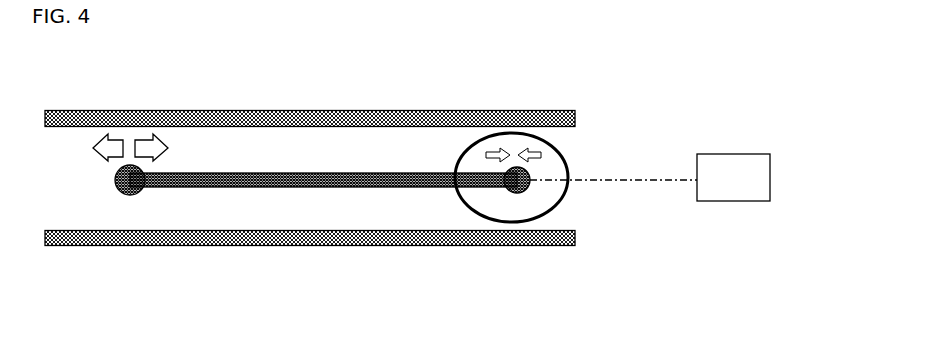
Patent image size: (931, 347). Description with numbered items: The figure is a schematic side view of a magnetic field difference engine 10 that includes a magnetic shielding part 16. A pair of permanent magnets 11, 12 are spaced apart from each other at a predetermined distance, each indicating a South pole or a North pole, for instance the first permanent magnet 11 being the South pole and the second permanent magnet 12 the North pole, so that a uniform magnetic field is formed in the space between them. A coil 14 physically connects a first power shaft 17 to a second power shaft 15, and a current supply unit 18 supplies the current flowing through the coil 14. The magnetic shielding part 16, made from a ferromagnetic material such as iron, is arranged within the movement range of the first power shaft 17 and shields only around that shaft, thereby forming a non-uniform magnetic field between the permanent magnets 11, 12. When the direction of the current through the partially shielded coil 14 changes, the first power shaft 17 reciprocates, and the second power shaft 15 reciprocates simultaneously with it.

The magnetic field difference engine 10 is at (71, 48).
The first permanent magnet 11 is at (222, 111).
The second permanent magnet 12 is at (137, 247).
The coil 14 is at (373, 172).
The second power shaft 15 is at (118, 186).
The magnetic shielding part 16 is at (477, 140).
The first power shaft 17 is at (530, 188).
The current supply unit 18 is at (771, 170).